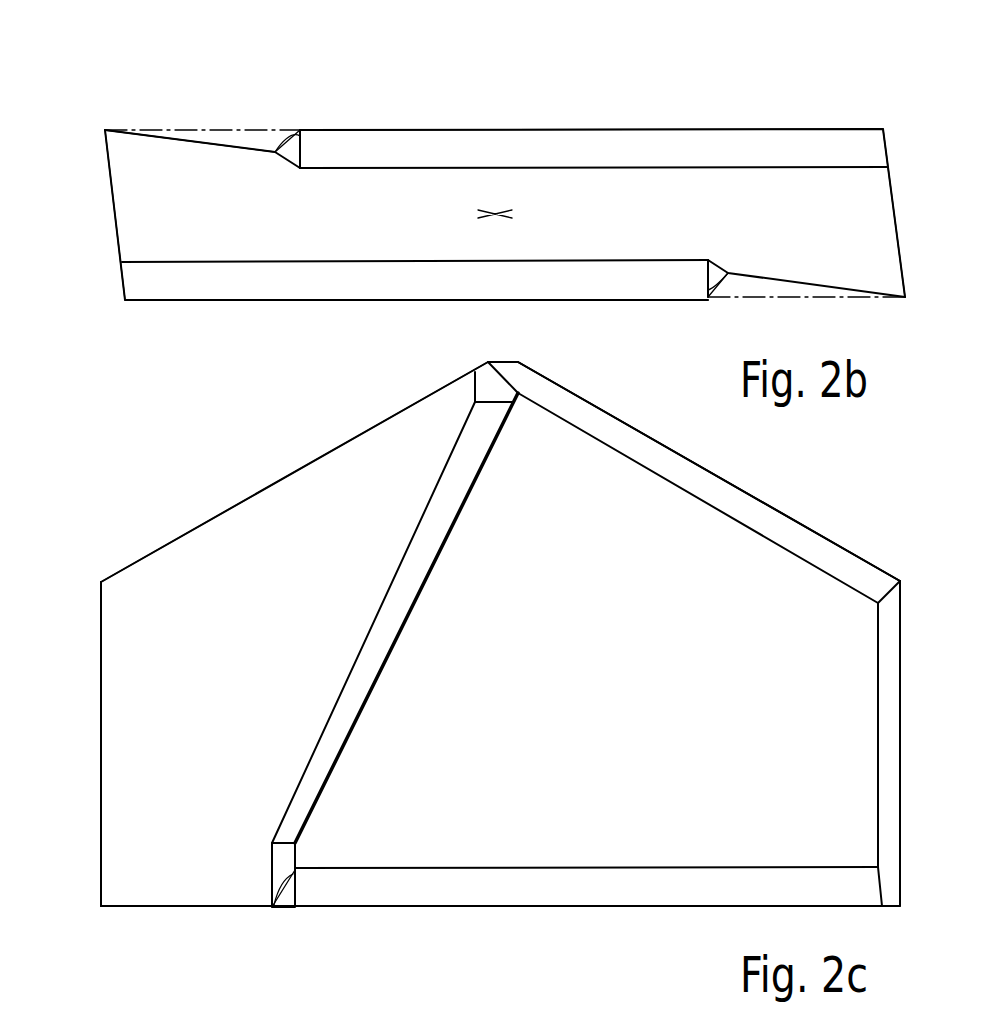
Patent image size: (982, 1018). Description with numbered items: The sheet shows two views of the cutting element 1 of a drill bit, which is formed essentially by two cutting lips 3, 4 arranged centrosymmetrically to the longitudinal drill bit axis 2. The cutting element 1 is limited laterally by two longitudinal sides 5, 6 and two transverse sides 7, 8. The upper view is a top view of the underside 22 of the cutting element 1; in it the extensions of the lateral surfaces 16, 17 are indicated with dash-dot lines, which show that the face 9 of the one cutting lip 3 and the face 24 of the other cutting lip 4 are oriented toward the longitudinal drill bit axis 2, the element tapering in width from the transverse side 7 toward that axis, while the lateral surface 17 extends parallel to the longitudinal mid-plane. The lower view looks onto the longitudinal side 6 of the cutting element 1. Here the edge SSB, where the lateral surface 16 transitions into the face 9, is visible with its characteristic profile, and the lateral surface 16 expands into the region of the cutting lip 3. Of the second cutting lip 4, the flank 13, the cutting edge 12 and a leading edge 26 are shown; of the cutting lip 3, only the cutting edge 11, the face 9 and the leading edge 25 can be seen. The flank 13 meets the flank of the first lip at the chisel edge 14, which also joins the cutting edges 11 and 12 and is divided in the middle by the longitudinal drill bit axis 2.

In FIG. 2B, the cutting element 1 is at (709, 111).
In FIG. 2C, the cutting element 1 is at (159, 484).
In FIG. 2B, the longitudinal drill bit axis 2 is at (497, 208).
In FIG. 2C, the cutting lip 3 is at (206, 474).
In FIG. 2C, the cutting lip 4 is at (607, 404).
In FIG. 2B, the longitudinal side 5 is at (422, 128).
In FIG. 2B, the longitudinal side 6 is at (309, 300).
In FIG. 2B, the transverse side 7 is at (118, 232).
In FIG. 2B, the transverse side 8 is at (893, 178).
In FIG. 2C, the transverse side 8 is at (890, 672).
In FIG. 2B, the face 9 is at (243, 146).
In FIG. 2C, the face 9 is at (185, 757).
In FIG. 2C, the cutting edge 11 is at (272, 485).
In FIG. 2C, the cutting edge 12 is at (713, 487).
In FIG. 2C, the flank 13 is at (735, 500).
In FIG. 2C, the chisel edge 14 is at (508, 362).
In FIG. 2B, the lateral surface 16 is at (617, 128).
In FIG. 2C, the lateral surface 16 is at (502, 790).
In FIG. 2B, the lateral surface 17 is at (398, 300).
In FIG. 2B, the underside 22 is at (175, 162).
In FIG. 2B, the face 24 is at (768, 280).
In FIG. 2C, the leading edge 25 is at (100, 803).
In FIG. 2C, the leading edge 26 is at (903, 613).
In FIG. 2C, the edge SSB is at (478, 492).